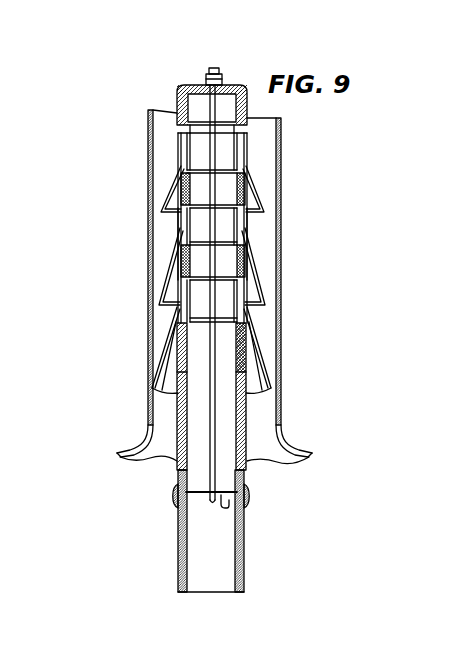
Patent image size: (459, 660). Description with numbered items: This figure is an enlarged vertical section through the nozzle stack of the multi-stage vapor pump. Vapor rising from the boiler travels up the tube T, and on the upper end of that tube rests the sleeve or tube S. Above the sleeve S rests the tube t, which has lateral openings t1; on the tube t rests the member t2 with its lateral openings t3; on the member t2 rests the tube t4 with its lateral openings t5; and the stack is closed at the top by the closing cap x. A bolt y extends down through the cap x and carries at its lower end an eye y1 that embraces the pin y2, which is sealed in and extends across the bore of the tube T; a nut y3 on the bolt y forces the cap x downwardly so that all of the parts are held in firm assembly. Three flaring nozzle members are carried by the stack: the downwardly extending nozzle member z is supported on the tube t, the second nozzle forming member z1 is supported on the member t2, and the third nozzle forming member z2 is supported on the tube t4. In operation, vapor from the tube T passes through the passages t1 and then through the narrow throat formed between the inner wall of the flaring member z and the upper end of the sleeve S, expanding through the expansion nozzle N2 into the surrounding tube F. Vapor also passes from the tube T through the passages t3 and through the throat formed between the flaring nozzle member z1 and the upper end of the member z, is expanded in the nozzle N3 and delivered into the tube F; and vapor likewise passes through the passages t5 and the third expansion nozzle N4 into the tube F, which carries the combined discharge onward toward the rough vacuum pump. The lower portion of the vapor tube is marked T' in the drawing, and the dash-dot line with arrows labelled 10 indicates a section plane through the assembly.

The cap x is at (194, 85).
The central rod y is at (226, 86).
The cross pin y1 is at (208, 498).
The collar y2 is at (243, 507).
The nut y3 is at (219, 98).
The inner sleeve t is at (247, 318).
The sleeve section t1 is at (182, 317).
The sleeve section t2 is at (187, 203).
The sleeve section t3 is at (187, 229).
The outer sleeve t4 is at (176, 181).
The upper sleeve section t5 is at (178, 127).
The lower cone z is at (165, 345).
The middle cone z1 is at (174, 260).
The upper cone z2 is at (177, 168).
The nut N2 is at (247, 372).
The nut N3 is at (178, 287).
The nut N4 is at (177, 190).
The cone wall S is at (255, 352).
The outer shell F is at (148, 278).
The outer tube T is at (291, 291).
The lower tube T' is at (232, 531).
The section line 10 is at (148, 410).